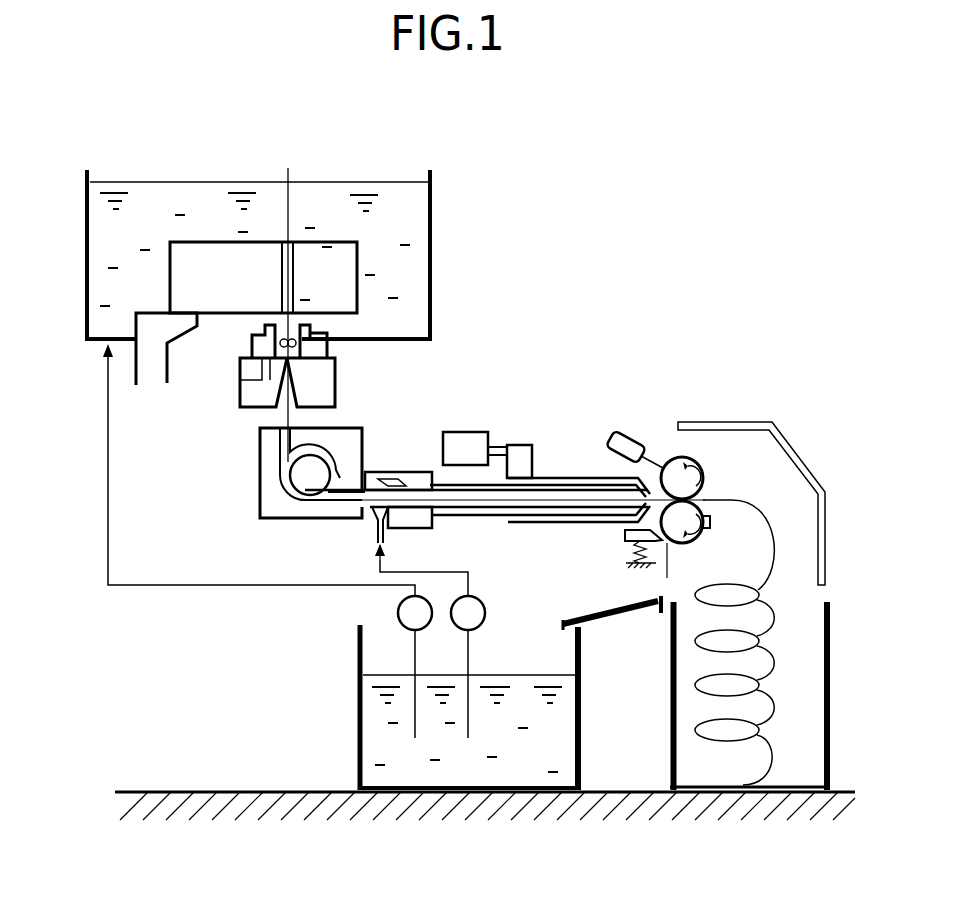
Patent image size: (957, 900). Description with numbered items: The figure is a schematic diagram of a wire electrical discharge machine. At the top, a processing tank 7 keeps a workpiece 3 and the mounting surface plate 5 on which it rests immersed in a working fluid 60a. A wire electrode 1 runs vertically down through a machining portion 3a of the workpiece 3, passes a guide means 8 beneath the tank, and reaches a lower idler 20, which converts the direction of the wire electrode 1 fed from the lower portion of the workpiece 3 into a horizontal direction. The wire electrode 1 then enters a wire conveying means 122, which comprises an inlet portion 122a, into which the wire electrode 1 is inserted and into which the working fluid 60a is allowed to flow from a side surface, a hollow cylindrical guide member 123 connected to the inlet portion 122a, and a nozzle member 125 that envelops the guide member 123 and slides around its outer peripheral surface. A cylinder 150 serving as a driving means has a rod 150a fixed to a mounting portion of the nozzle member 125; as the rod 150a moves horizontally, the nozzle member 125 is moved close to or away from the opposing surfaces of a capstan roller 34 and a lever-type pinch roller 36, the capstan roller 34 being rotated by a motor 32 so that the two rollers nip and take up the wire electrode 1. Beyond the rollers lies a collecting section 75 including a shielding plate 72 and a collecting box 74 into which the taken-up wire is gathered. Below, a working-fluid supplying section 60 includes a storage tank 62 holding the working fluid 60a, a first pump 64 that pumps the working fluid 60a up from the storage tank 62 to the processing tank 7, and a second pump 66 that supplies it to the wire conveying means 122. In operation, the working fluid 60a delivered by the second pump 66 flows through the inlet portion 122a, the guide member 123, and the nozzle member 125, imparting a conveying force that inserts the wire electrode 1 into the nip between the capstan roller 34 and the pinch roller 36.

The wire electrode 1 is at (291, 172).
The workpiece 3 is at (358, 255).
The machining portion 3a is at (283, 242).
The mounting surface plate 5 is at (150, 311).
The processing tank 7 is at (436, 183).
The guide means 8 is at (240, 404).
The lower idler 20 is at (292, 477).
The wire conveying means 122 is at (398, 472).
The inlet portion 122a is at (372, 543).
The guide member 123 is at (493, 528).
The nozzle member 125 is at (572, 478).
The cylinder 150 is at (465, 432).
The rod 150a is at (518, 445).
The motor 32 is at (628, 434).
The capstan roller 34 is at (697, 459).
The pinch roller 36 is at (687, 542).
The shielding plate 72 is at (790, 446).
The collecting section 75 is at (829, 535).
The collecting box 74 is at (831, 690).
The working-fluid supplying section 60 is at (429, 745).
The storage tank 62 is at (357, 757).
The working fluid 60a is at (466, 775).
The first pump 64 is at (398, 620).
The second pump 66 is at (486, 617).